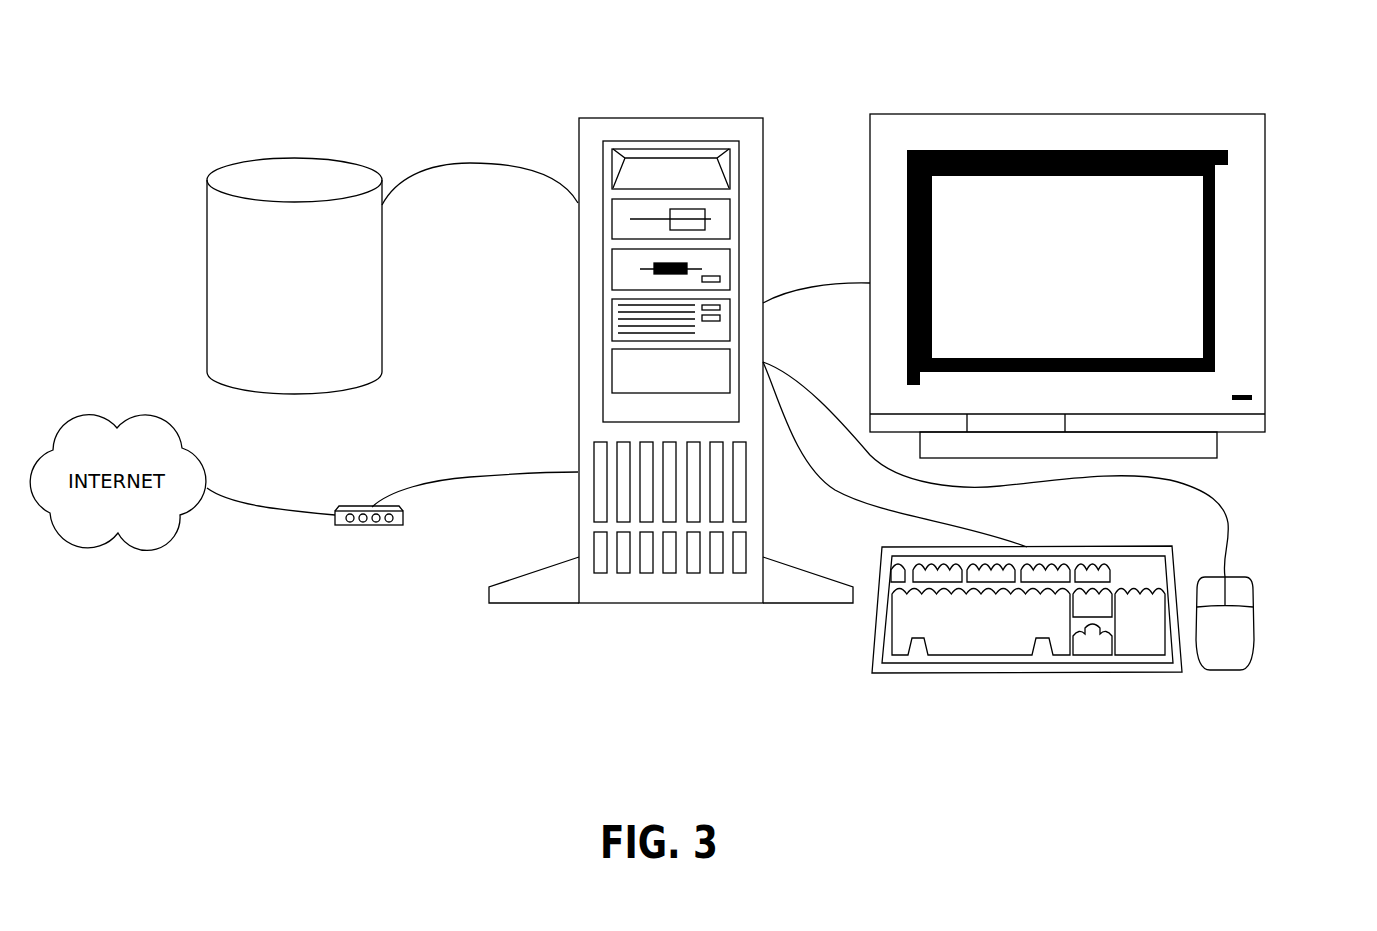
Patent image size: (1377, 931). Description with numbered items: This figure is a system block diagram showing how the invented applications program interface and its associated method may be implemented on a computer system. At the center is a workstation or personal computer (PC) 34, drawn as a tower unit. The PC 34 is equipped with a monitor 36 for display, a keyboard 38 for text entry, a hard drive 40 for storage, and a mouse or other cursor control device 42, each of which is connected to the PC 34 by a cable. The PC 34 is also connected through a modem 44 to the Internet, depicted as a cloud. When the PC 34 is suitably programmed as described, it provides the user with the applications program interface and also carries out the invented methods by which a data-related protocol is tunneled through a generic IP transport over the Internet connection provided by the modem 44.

The workstation or personal computer (PC) 34 is at (645, 372).
The monitor 36 is at (1265, 198).
The keyboard 38 is at (1025, 673).
The hard drive 40 is at (290, 158).
The mouse or other cursor control device 42 is at (1253, 600).
The modem 44 is at (370, 525).